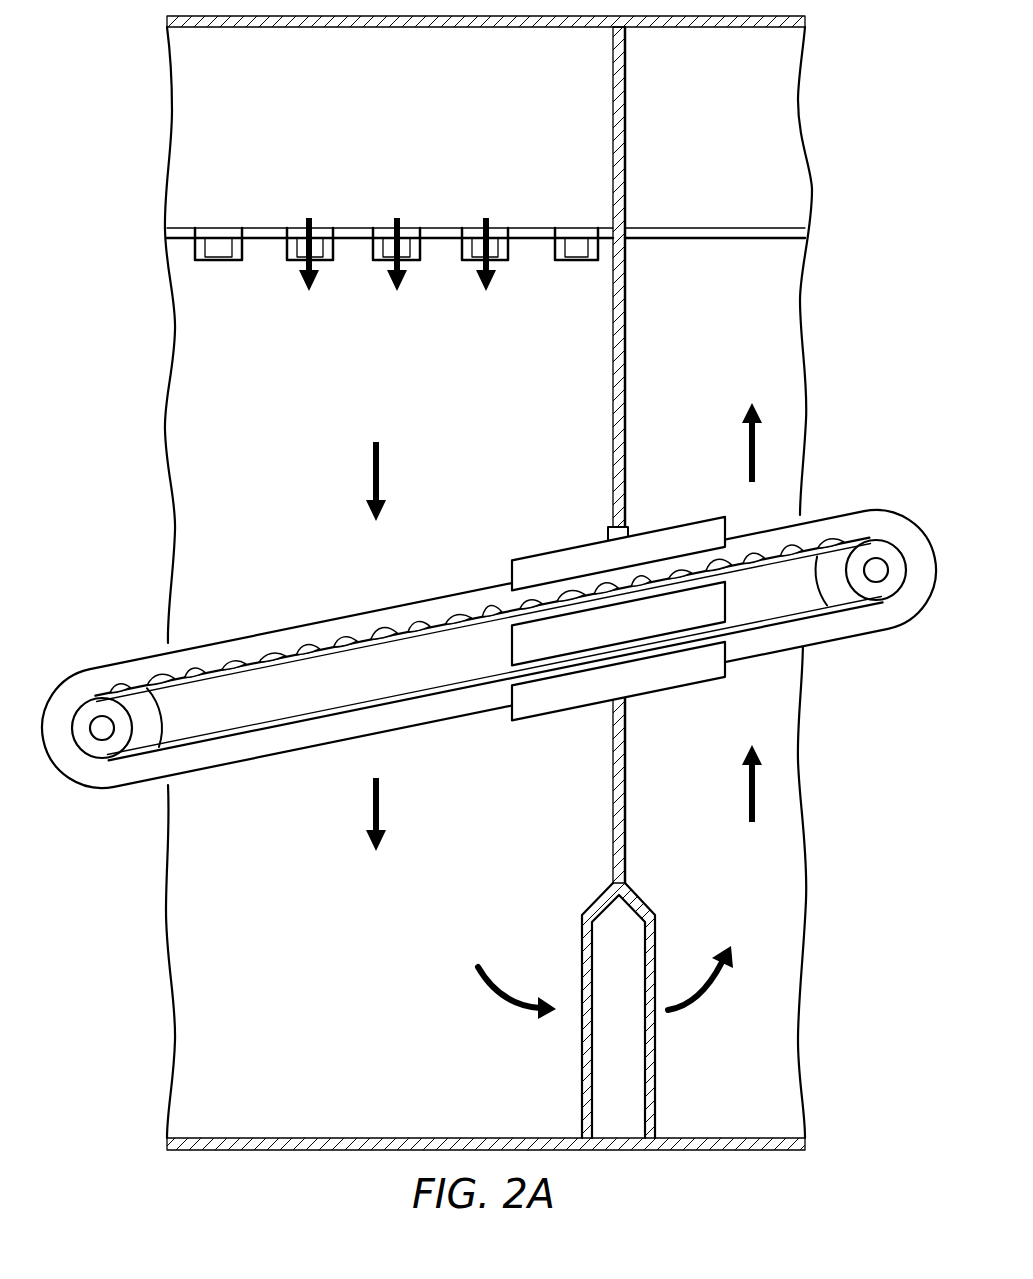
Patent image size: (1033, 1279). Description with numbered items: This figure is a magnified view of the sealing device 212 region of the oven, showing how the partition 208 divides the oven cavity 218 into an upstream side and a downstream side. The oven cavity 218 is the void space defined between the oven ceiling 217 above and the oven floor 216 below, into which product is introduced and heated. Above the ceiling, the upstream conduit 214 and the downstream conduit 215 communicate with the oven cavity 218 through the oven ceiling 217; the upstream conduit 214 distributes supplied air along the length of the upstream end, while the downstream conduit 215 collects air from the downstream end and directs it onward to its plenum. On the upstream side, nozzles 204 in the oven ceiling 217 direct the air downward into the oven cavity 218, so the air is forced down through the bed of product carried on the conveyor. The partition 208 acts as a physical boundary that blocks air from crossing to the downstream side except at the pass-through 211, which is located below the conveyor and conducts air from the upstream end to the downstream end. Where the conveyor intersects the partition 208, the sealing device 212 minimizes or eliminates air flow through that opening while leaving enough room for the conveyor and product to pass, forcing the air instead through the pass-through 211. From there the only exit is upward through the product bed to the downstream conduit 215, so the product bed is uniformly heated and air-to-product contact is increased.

The nozzles 204 is at (222, 258).
The partition 208 is at (612, 352).
The pass-through 211 is at (656, 1062).
The sealing device 212 is at (557, 556).
The upstream conduit 214 is at (428, 126).
The downstream conduit 215 is at (736, 126).
The oven floor 216 is at (328, 1136).
The oven ceiling 217 is at (390, 244).
The oven cavity 218 is at (304, 427).